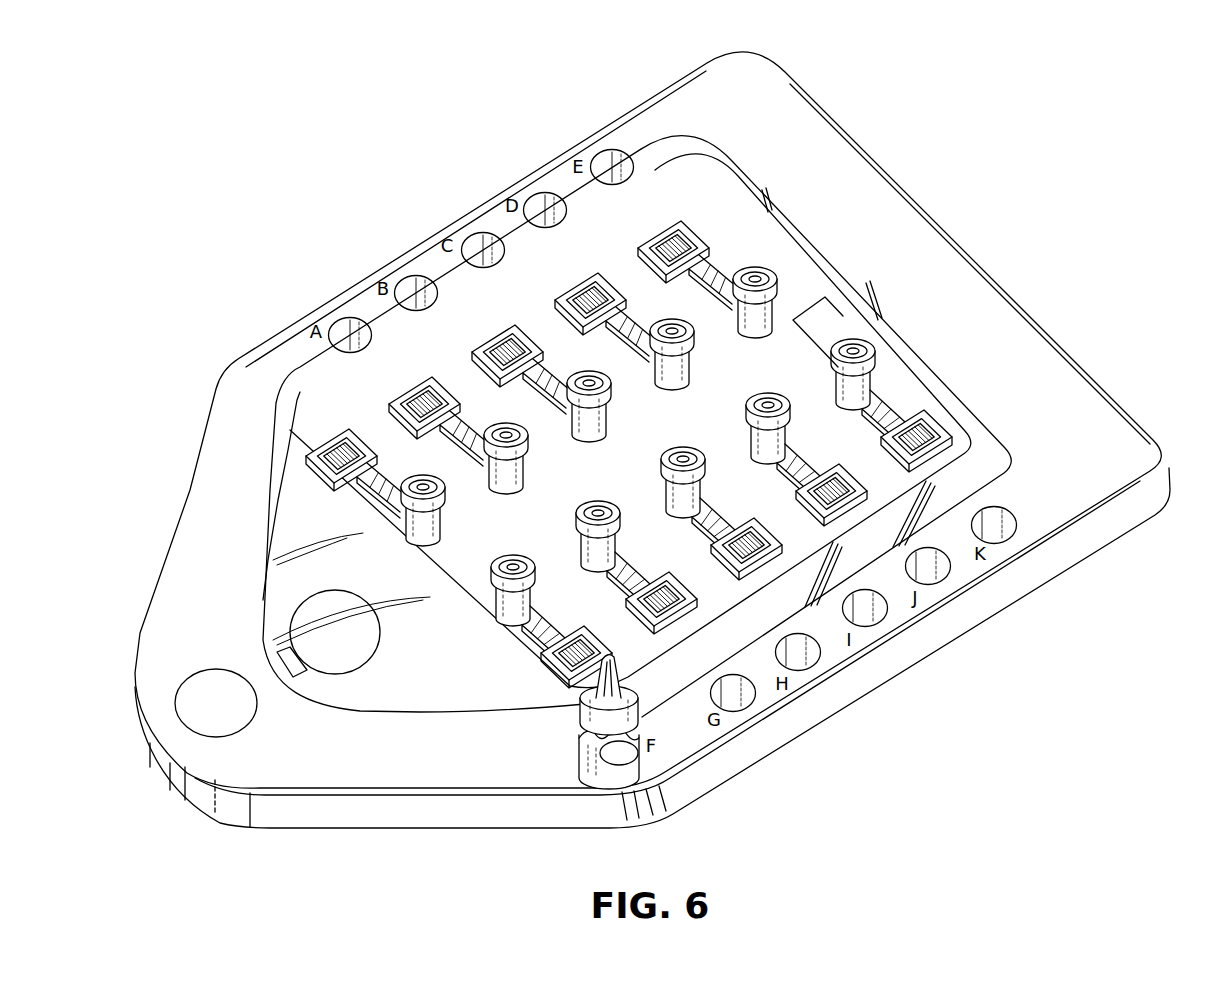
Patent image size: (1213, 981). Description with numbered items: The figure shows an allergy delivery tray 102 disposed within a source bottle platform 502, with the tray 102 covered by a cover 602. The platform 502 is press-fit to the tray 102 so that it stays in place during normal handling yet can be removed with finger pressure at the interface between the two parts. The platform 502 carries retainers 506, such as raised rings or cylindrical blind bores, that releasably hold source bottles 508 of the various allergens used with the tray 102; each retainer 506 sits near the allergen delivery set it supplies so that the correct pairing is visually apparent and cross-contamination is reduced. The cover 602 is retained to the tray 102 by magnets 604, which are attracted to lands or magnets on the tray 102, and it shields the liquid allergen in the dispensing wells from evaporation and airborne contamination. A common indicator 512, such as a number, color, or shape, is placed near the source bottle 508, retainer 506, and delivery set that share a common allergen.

The tray 102 is at (747, 247).
The source bottle platform 502 is at (670, 440).
The retainer 506 is at (1010, 533).
The source bottle 508 is at (643, 767).
The common indicator 512 is at (600, 760).
The cover 602 is at (700, 138).
The magnet 604 is at (827, 315).